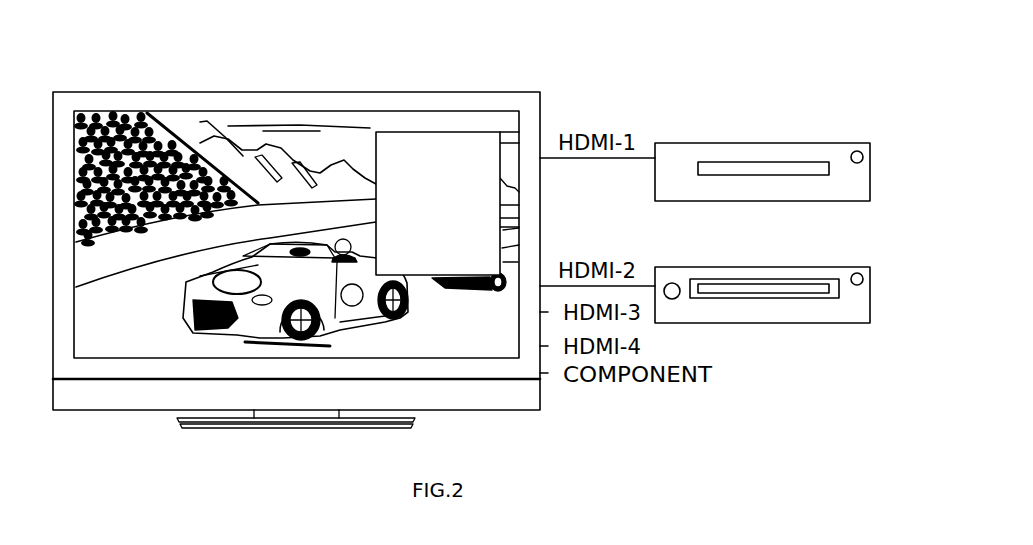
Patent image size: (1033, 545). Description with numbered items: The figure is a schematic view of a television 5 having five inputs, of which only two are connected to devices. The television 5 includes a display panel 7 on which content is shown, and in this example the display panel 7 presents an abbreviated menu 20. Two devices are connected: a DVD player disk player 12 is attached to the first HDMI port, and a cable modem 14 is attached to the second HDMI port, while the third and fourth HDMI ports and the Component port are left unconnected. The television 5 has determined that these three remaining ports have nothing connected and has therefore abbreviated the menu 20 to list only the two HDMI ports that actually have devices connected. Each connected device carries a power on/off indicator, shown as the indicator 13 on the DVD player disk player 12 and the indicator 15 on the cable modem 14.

The television 5 is at (374, 92).
The display panel 7 is at (500, 343).
The menu 20 is at (500, 142).
The DVD player disk player 12 is at (684, 143).
The power on/off indicator 13 is at (851, 153).
The cable modem 14 is at (690, 267).
The power on/off indicator 15 is at (851, 274).